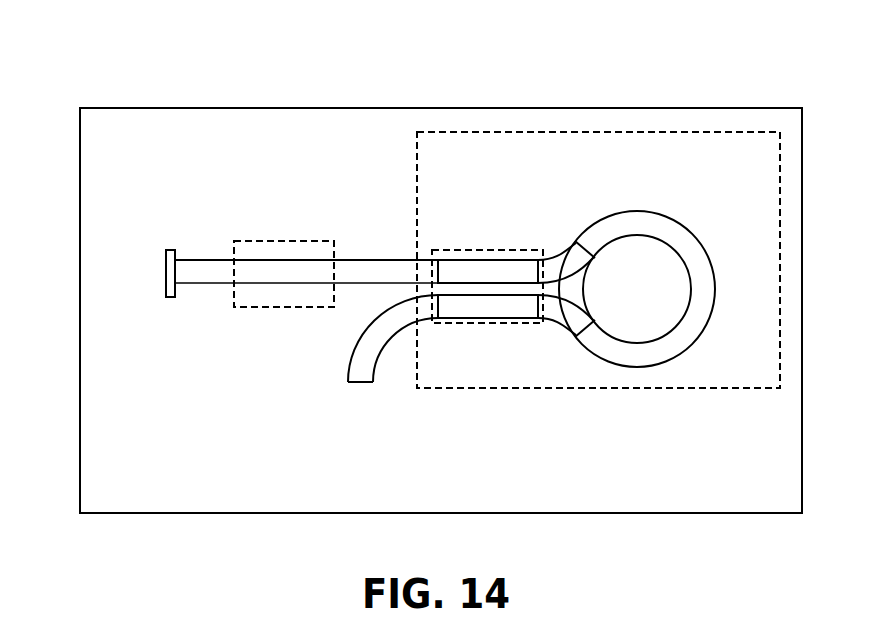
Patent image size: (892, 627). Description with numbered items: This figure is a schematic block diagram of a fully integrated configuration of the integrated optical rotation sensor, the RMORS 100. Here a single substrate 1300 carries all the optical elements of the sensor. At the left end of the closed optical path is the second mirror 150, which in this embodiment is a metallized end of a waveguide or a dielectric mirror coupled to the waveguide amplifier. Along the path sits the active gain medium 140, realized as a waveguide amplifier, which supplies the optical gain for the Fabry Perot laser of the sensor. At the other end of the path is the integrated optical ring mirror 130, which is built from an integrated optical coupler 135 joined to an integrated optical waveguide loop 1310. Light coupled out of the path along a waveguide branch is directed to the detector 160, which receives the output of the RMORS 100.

The RMORS 100 is at (170, 50).
The second mirror 150 is at (168, 300).
The active gain medium 140 is at (257, 241).
The integrated optical coupler 135 is at (473, 246).
The integrated optical ring mirror 130 is at (598, 264).
The single substrate 1300 is at (697, 108).
The integrated optical waveguide loop 1310 is at (635, 213).
The detector 160 is at (360, 370).